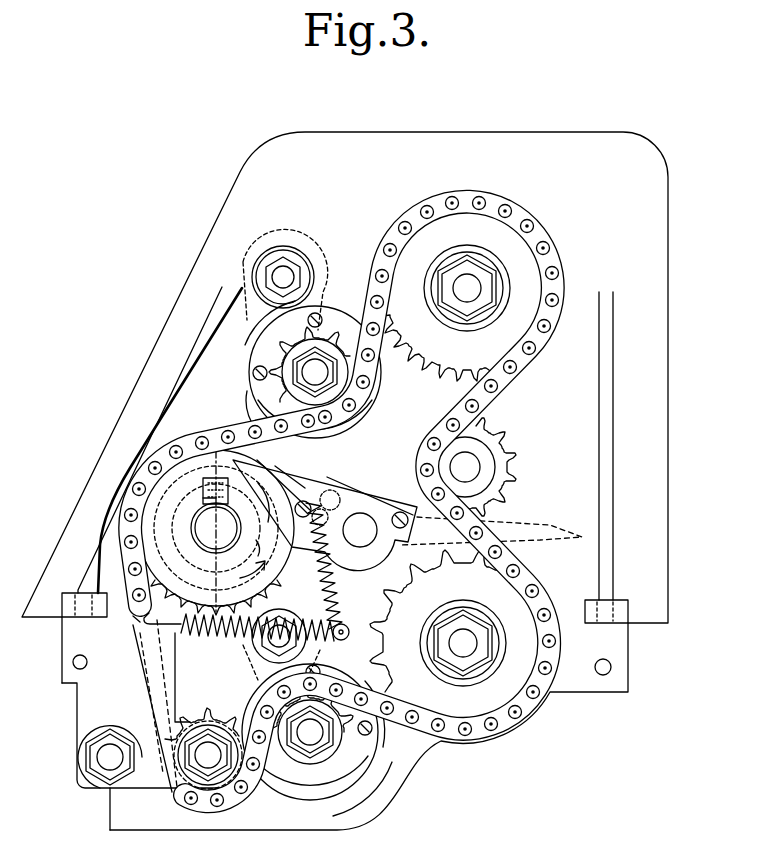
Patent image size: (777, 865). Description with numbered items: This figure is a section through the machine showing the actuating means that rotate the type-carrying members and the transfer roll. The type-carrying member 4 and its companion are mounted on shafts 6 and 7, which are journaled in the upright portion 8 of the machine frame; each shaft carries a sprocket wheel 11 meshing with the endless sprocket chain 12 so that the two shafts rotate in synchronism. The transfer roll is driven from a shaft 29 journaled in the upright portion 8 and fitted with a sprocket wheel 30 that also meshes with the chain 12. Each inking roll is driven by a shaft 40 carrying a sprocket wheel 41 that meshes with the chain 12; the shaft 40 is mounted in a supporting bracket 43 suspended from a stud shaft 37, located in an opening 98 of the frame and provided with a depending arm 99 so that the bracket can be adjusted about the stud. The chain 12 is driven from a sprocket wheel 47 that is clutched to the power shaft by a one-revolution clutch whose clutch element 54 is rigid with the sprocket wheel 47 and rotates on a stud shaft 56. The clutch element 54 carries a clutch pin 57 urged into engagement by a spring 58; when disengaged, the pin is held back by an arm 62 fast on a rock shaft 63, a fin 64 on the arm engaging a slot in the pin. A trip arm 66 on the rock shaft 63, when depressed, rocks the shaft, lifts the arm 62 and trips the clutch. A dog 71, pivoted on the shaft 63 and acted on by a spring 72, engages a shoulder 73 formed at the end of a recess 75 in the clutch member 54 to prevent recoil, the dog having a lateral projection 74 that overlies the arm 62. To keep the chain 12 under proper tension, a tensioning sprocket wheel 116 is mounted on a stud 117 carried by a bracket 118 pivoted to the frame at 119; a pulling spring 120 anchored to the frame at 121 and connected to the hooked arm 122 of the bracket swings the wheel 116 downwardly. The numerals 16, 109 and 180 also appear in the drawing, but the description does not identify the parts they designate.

The type-carrying member 4 is at (345, 481).
The shaft 6 is at (468, 283).
The shaft 7 is at (468, 657).
The upright portion of the machine frame 8 is at (577, 418).
The sprocket wheel 11 is at (497, 243).
The sprocket chain 12 is at (490, 397).
The cam surface 16 is at (256, 540).
The shaft 29 is at (472, 468).
The sprocket wheel 30 is at (502, 448).
The stud shaft 37 is at (285, 263).
The driving shaft 40 is at (313, 372).
The sprocket wheel 41 is at (336, 337).
The supporting bracket 43 is at (255, 330).
The sprocket wheel 47 is at (160, 592).
The clutch element 54 is at (150, 515).
The stud shaft 56 is at (207, 545).
The clutch pin 57 is at (203, 498).
The spring 58 is at (216, 528).
The arm 62 is at (226, 440).
The rock shaft 63 is at (363, 540).
The fin 64 is at (196, 482).
The trip arm 66 is at (545, 540).
The dog 71 is at (285, 486).
The spring 72 is at (338, 583).
The shoulder 73 is at (218, 440).
The lateral projection 74 is at (283, 468).
The recess 75 is at (262, 492).
The opening 98 is at (258, 337).
The depending arm 99 is at (350, 428).
The bracket outline (phantom) 109 is at (322, 265).
The tensioning sprocket wheel 116 is at (190, 708).
The stud 117 is at (207, 763).
The bracket 118 is at (133, 720).
The pivot 119 is at (100, 756).
The pulling spring 120 is at (215, 634).
The anchor 121 is at (341, 640).
The hooked arm 122 is at (136, 622).
The bracket arm 180 is at (247, 391).